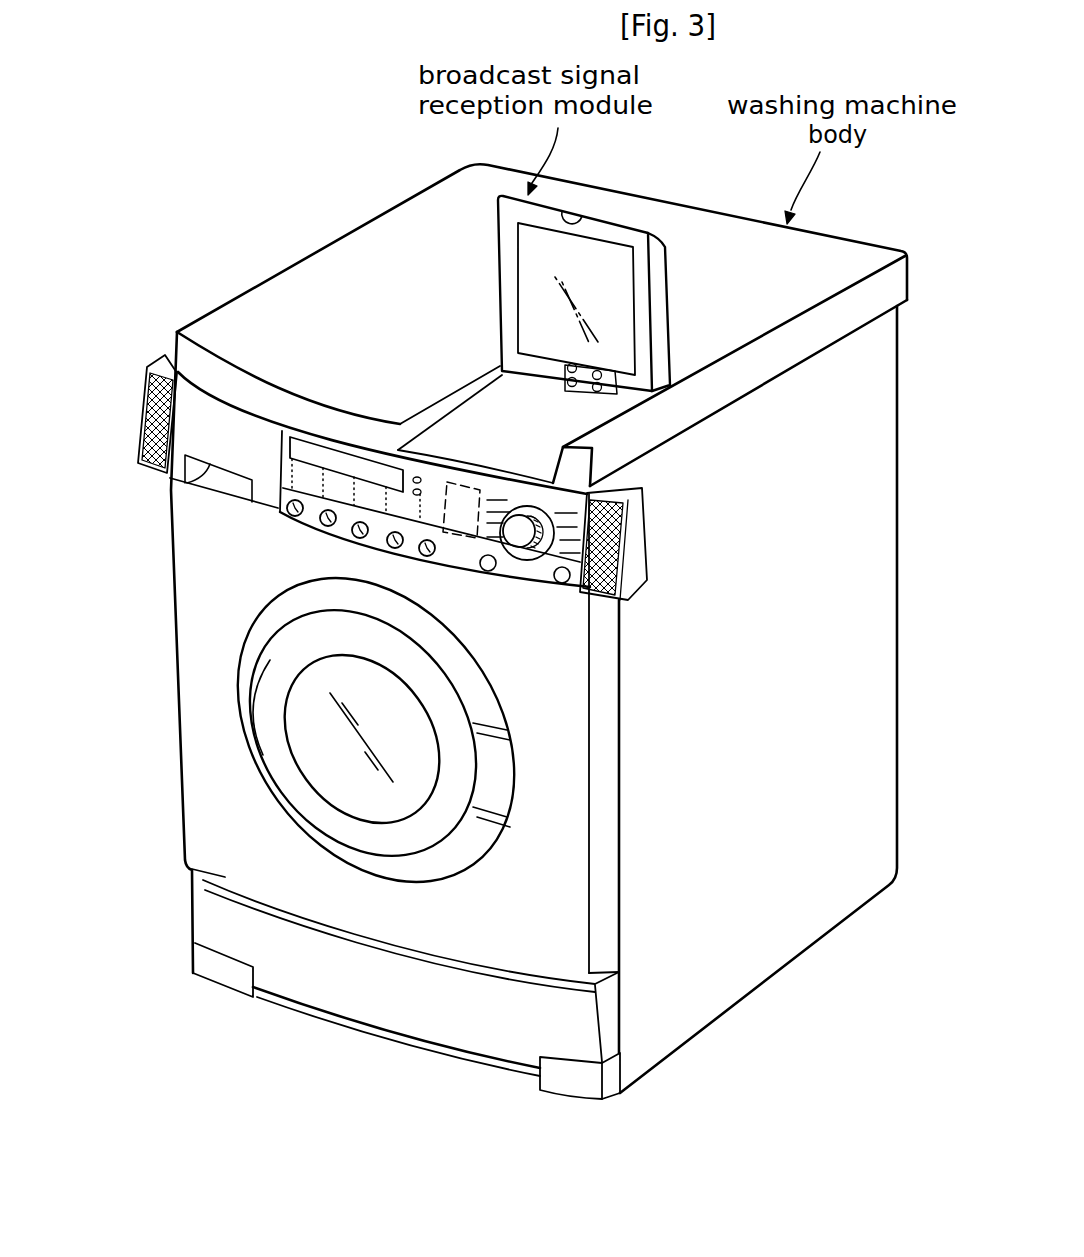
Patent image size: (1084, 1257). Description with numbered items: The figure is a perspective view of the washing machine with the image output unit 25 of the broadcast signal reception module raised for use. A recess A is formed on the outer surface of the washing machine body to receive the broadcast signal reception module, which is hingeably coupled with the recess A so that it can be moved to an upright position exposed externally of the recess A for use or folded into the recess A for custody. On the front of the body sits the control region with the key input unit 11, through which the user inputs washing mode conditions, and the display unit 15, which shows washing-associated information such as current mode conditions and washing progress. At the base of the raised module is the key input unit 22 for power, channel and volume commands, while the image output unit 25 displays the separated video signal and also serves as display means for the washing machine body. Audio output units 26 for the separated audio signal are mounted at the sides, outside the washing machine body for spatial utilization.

The key input unit 11 is at (264, 469).
The display unit 15 is at (337, 462).
The key input unit 22 is at (617, 382).
The image output unit 25 is at (535, 255).
The audio output unit 26 is at (145, 420).
The recess A is at (468, 427).